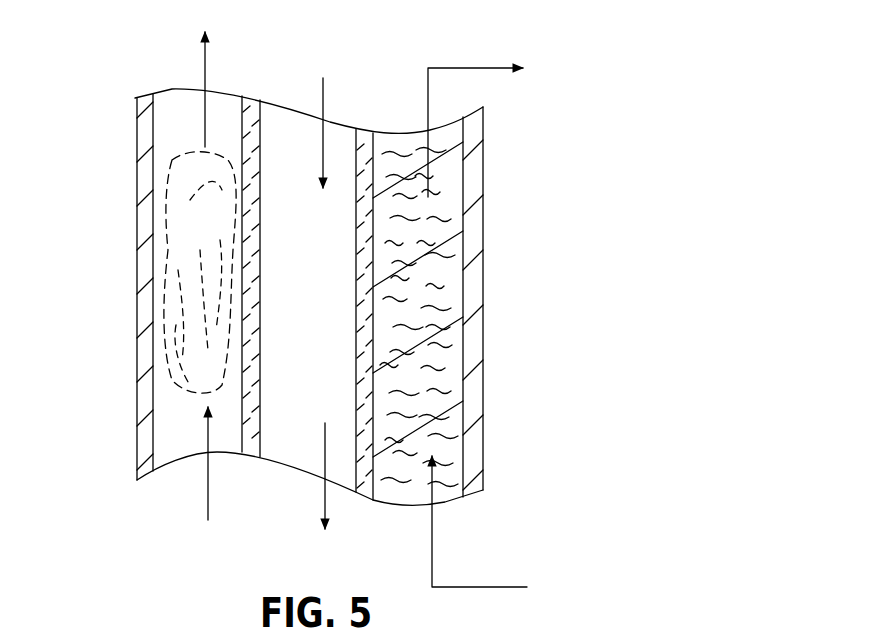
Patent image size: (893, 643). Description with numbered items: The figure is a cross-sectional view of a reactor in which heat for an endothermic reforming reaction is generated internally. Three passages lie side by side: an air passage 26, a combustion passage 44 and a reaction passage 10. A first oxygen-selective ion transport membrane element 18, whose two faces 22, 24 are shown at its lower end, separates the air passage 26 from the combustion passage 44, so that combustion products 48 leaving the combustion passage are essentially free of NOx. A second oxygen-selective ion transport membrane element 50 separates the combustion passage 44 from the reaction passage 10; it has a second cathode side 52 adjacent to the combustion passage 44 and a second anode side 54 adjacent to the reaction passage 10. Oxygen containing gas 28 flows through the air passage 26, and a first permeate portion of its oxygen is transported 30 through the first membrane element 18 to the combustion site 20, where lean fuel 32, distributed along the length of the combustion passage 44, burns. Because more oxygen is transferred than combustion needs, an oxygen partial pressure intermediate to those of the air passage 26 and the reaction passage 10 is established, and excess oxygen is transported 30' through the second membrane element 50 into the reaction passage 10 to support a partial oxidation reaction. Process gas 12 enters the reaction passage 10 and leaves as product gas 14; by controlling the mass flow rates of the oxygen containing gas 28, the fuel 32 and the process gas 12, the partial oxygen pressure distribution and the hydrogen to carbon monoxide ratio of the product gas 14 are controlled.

The reaction passage 10 is at (447, 293).
The process gas 12 is at (433, 547).
The product gas 14 is at (485, 69).
The first oxygen-selective ion transport membrane element 18 is at (245, 97).
The combustion site 20 is at (183, 200).
The wall surface 22 is at (263, 430).
The wall surface 24 is at (243, 432).
The air passage 26 is at (292, 247).
The oxygen containing gas 28 is at (327, 108).
The oxygen transport 30 is at (174, 298).
The oxygen transport 30' is at (449, 248).
The fuel 32 is at (212, 508).
The combustion passage 44 is at (180, 322).
The combustion products 48 is at (206, 58).
The second oxygen-selective ion transport membrane element 50 is at (363, 148).
The second cathode side 52 is at (358, 465).
The second anode side 54 is at (380, 470).